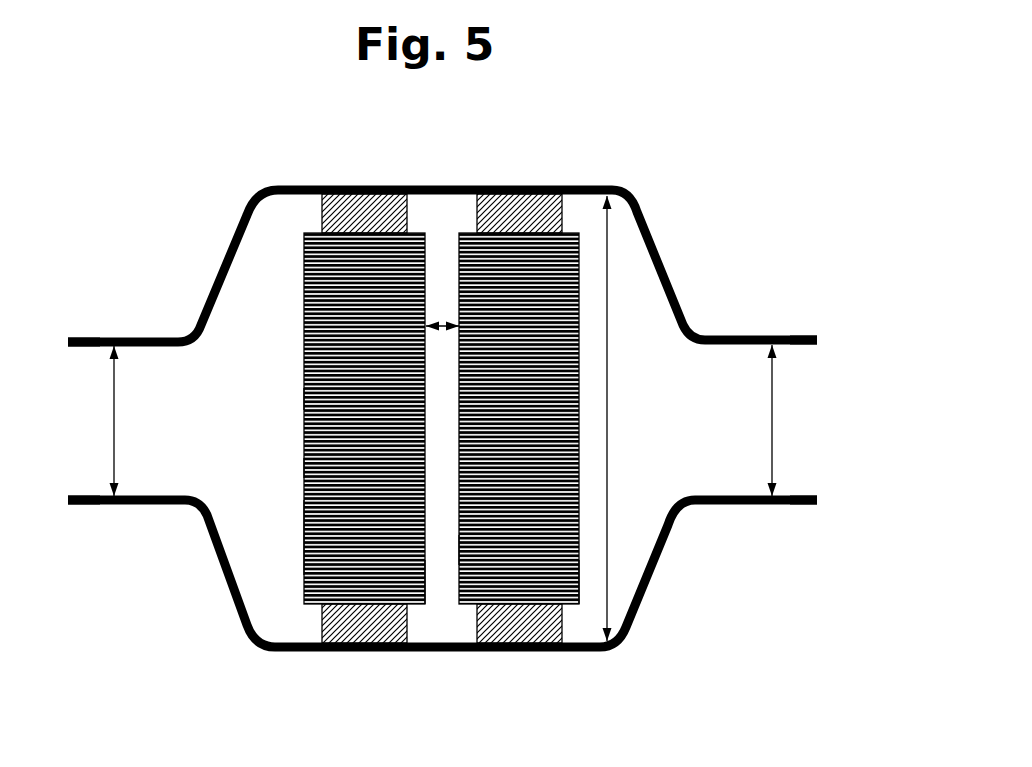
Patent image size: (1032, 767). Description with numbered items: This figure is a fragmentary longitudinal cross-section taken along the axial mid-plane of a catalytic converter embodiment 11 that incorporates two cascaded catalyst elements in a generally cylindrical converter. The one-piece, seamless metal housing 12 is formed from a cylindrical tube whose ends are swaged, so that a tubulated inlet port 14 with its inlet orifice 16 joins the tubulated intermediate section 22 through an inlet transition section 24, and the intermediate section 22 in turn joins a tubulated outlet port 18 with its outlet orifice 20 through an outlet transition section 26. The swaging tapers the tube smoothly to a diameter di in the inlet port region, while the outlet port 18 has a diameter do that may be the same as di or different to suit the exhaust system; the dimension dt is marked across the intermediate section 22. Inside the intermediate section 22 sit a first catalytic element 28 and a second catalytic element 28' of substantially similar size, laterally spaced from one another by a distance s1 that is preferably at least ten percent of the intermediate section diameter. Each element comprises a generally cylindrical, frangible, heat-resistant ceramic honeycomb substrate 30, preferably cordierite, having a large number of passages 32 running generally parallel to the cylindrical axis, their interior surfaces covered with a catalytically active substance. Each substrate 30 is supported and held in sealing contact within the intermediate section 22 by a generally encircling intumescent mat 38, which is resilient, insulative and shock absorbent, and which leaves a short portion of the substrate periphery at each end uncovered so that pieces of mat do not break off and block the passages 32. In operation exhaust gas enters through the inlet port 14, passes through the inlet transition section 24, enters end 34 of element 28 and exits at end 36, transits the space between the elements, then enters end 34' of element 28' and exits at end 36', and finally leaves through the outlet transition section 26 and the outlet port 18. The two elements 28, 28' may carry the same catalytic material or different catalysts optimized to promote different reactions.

The catalytic converter embodiment 11 is at (175, 119).
The housing 12 is at (292, 180).
The inlet port 14 is at (147, 333).
The inlet orifice 16 is at (75, 413).
The outlet port 18 is at (773, 336).
The outlet orifice 20 is at (818, 420).
The intermediate section 22 is at (387, 182).
The inlet transition section 24 is at (212, 267).
The outlet transition section 26 is at (690, 527).
The catalytic element 28 is at (258, 485).
The second catalytic element 28' is at (560, 422).
The ceramic honeycomb substrate 30 is at (304, 468).
The passages 32 is at (304, 568).
The end of element 34 is at (204, 478).
The end of second element 34' is at (478, 618).
The other end of element 36 is at (418, 649).
The other end of second element 36' is at (627, 639).
The mat 38 is at (562, 622).
The spacing distance s1 is at (444, 326).
The inlet port diameter di is at (113, 468).
The outlet port diameter do is at (772, 466).
The transition diameter dt is at (610, 532).